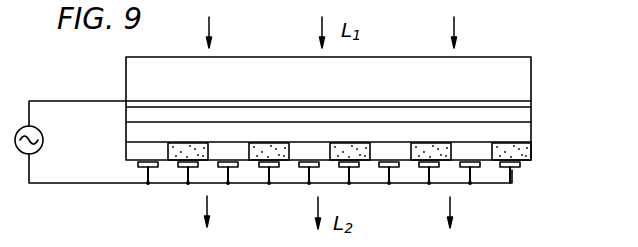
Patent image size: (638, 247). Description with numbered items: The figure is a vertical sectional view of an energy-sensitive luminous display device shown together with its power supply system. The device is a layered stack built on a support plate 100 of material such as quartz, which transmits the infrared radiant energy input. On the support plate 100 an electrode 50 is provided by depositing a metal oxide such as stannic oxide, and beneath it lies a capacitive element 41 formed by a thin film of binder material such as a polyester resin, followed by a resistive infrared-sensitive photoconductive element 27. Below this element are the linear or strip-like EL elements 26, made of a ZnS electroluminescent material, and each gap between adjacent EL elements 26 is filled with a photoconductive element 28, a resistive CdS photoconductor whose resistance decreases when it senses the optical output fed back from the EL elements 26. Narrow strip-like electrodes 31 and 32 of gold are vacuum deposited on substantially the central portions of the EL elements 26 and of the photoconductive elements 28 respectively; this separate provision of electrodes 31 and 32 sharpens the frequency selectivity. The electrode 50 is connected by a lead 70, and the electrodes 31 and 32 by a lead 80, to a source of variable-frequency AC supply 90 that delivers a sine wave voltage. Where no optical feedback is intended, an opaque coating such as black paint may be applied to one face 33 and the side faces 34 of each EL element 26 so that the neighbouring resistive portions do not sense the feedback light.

The support plate 100 is at (531, 70).
The electrode 50 is at (529, 105).
The capacitive element 41 is at (527, 117).
The resistive infrared-sensitive photoconductive element 27 is at (527, 137).
The face of EL element 33 is at (178, 143).
The side faces of EL element 34 is at (163, 145).
The electrode 31 is at (522, 169).
The EL element 26 is at (330, 170).
The photoconductive element 28 is at (455, 170).
The electrode 32 is at (476, 167).
The lead 70 is at (63, 100).
The lead 80 is at (63, 184).
The source of variable-frequency AC supply 90 is at (44, 138).